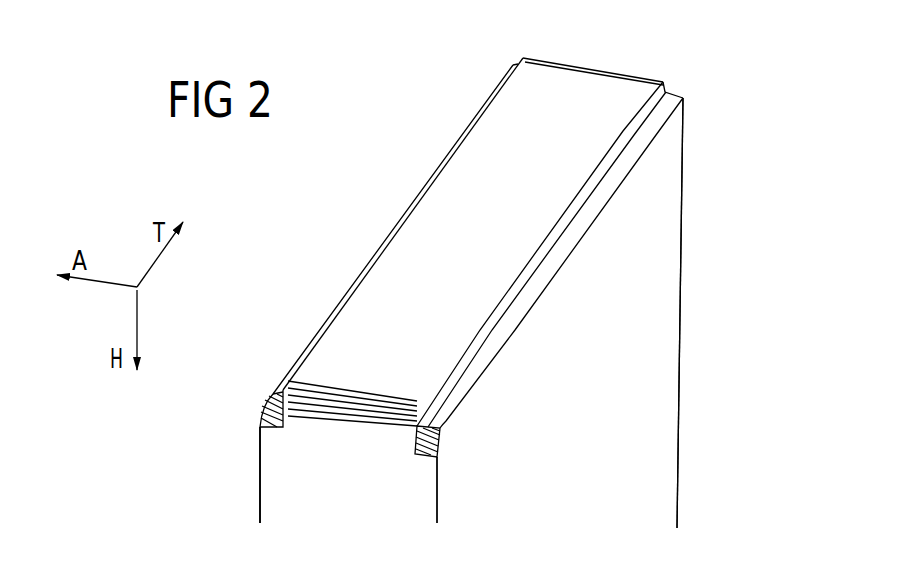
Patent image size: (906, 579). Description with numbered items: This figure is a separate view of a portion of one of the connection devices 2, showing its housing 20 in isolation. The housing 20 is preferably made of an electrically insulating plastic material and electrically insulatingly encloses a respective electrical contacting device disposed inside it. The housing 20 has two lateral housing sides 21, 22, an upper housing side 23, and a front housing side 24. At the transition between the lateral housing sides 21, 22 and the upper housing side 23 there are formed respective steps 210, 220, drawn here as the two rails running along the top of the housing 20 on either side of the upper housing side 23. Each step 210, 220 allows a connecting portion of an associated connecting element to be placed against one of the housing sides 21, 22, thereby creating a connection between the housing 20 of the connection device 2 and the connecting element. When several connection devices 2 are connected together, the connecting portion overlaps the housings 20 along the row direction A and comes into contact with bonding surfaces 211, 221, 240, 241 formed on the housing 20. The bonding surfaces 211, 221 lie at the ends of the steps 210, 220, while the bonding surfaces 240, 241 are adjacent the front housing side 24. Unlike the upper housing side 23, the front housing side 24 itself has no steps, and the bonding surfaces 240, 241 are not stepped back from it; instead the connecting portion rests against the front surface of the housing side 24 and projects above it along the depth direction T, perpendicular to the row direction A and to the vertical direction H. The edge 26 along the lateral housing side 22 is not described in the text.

The connection device 2 is at (603, 68).
The housing 20 is at (622, 100).
The lateral housing side 21 is at (260, 473).
The lateral housing side 22 is at (655, 352).
The upper housing side 23 is at (383, 237).
The front housing side 24 is at (337, 503).
The outer edge 26 is at (682, 252).
The step 210 is at (327, 320).
The bonding surface 211 is at (274, 390).
The step 220 is at (522, 290).
The bonding surface 221 is at (490, 347).
The bonding surface 240 is at (267, 507).
The bonding surface 241 is at (418, 497).